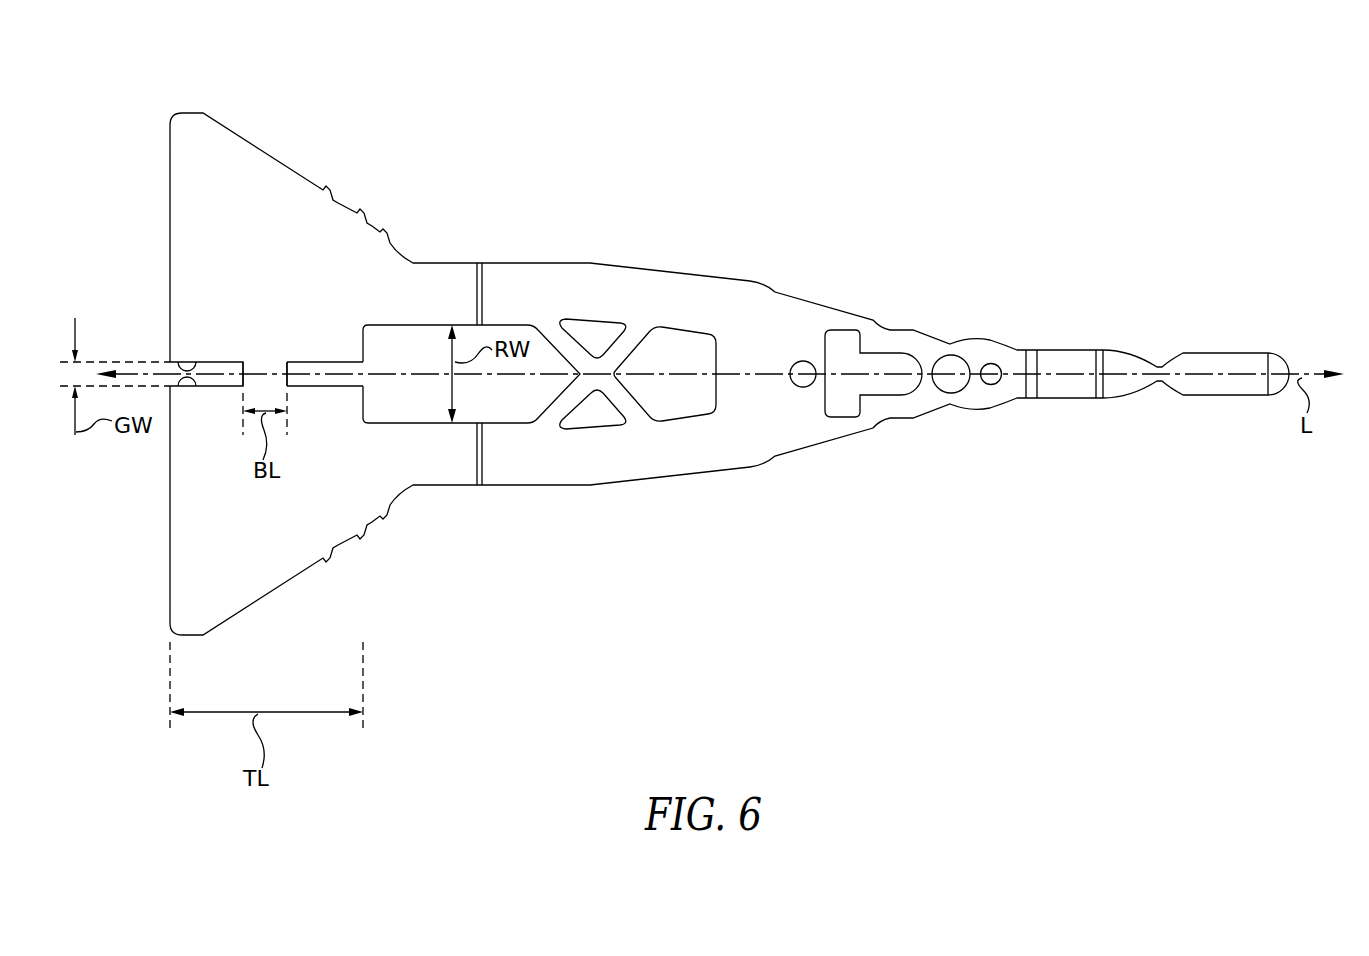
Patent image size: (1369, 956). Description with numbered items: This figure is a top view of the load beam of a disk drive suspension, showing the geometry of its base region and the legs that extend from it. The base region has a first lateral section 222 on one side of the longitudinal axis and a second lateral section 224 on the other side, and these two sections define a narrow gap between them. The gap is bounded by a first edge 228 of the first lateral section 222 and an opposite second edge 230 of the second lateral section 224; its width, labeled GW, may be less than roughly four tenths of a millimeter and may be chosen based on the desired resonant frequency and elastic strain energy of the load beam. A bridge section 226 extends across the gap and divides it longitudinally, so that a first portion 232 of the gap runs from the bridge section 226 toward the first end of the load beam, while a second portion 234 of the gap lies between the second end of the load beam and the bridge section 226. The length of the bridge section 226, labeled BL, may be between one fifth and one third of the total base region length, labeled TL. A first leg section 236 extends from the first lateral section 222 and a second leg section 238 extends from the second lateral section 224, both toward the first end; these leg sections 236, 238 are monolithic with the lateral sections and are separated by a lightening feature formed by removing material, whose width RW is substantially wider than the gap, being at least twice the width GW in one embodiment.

The first lateral section 222 is at (258, 600).
The second lateral section 224 is at (263, 152).
The bridge section 226 is at (265, 372).
The first edge 228 is at (195, 386).
The second edge 230 is at (195, 362).
The first portion of the gap 232 is at (320, 362).
The second portion of the gap 234 is at (218, 362).
The first leg section 236 is at (557, 485).
The second leg section 238 is at (543, 263).